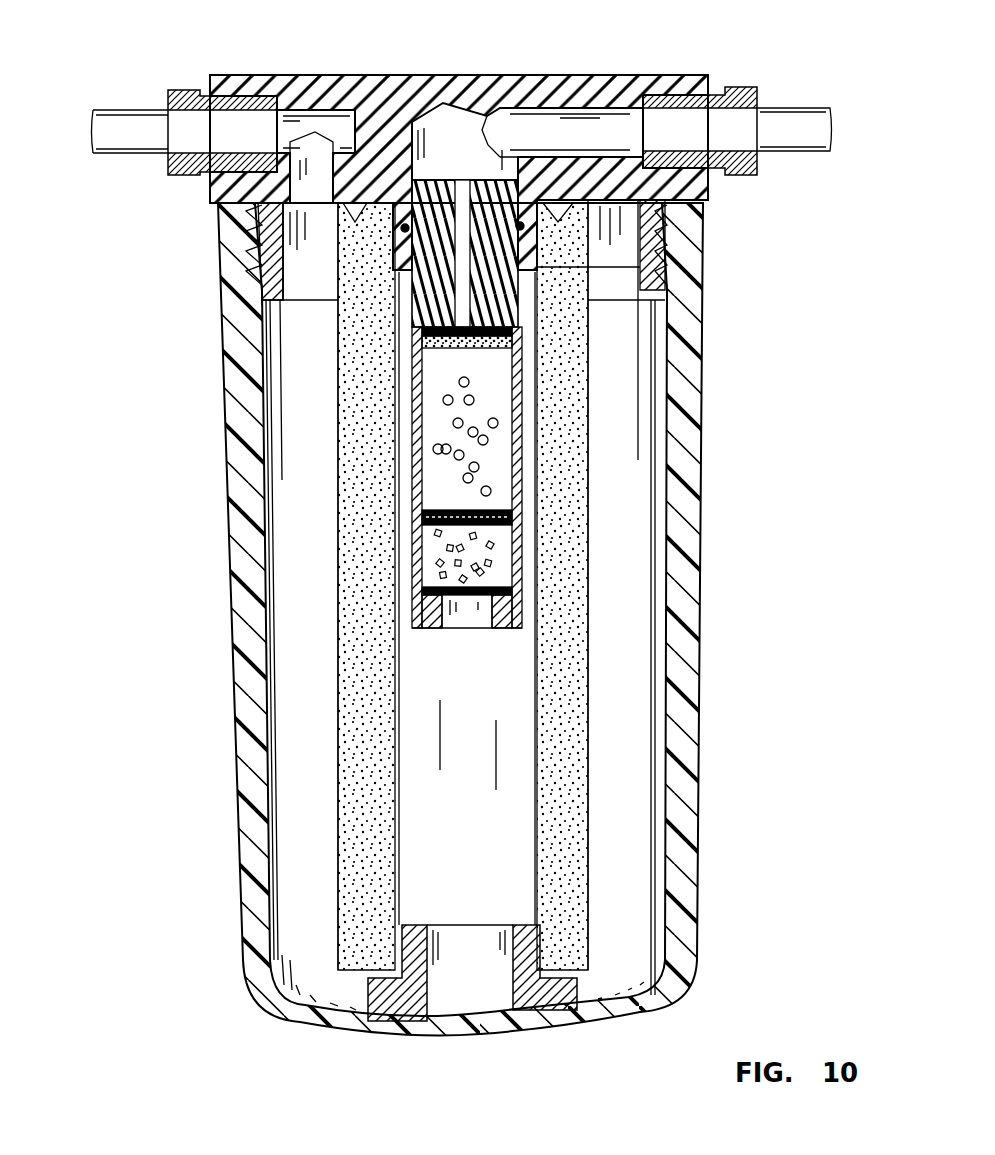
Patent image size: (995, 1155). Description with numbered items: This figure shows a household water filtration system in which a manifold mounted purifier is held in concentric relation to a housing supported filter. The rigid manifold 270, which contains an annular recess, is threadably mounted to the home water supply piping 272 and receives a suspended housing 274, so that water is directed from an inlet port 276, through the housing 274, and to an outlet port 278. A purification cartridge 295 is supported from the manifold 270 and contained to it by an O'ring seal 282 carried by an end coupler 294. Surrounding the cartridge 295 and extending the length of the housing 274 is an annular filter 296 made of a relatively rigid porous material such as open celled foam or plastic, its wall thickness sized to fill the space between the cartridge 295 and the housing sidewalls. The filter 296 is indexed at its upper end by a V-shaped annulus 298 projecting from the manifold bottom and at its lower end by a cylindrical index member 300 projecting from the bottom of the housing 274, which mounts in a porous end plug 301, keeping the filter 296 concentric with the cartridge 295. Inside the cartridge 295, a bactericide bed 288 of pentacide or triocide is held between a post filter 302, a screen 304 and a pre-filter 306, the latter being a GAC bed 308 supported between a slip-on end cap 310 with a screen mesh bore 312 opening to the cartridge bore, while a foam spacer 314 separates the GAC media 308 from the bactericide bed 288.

The manifold 270 is at (475, 62).
The home water supply piping 272 is at (178, 88).
The housing 274 is at (703, 690).
The inlet port 276 is at (335, 128).
The outlet port 278 is at (567, 130).
The O'ring seal 282 is at (410, 240).
The bactericide bed 288 is at (445, 408).
The end coupler 294 is at (663, 261).
The purification cartridge 295 is at (396, 492).
The annular filter 296 is at (600, 812).
The V-shaped annulus 298 is at (405, 226).
The cylindrical index member 300 is at (478, 1012).
The porous end plug 301 is at (560, 1015).
The post filter 302 is at (487, 333).
The screen 304 is at (485, 350).
The pre-filter 306 is at (522, 562).
The GAC bed 308 is at (433, 572).
The slip-on end cap 310 is at (423, 628).
The screen mesh bore 312 is at (480, 623).
The foam spacer 314 is at (507, 511).